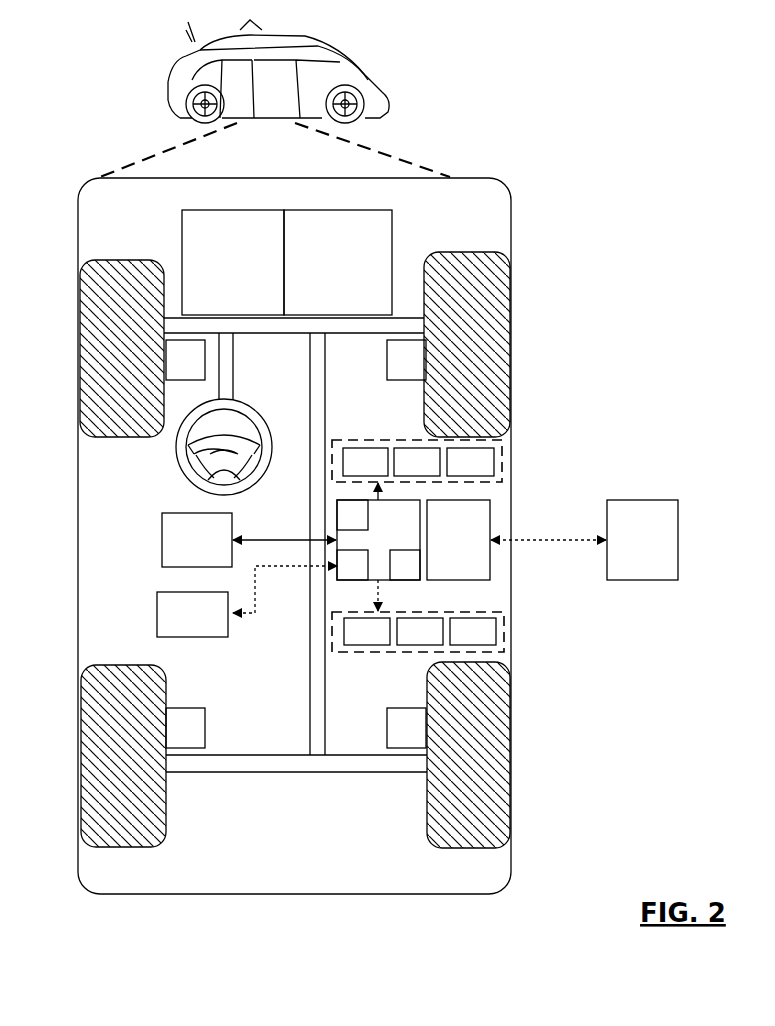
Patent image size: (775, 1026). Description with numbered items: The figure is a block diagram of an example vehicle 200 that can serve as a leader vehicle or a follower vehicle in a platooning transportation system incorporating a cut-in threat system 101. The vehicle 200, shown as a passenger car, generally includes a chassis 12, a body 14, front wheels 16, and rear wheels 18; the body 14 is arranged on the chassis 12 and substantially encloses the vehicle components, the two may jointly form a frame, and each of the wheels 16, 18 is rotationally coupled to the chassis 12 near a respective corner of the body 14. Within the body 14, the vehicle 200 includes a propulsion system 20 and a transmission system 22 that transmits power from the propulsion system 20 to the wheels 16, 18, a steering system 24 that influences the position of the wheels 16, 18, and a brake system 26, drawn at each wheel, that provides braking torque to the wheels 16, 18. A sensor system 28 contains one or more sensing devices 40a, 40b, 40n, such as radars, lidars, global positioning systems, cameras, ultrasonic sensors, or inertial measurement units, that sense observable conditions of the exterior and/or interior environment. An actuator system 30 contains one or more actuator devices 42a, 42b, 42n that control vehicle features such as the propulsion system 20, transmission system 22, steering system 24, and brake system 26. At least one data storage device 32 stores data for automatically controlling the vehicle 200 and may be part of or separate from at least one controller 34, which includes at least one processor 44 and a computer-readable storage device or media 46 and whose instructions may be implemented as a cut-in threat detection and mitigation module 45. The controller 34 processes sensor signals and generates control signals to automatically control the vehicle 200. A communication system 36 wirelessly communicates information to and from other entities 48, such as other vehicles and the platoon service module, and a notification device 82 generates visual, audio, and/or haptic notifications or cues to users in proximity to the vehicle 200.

The vehicle 200 is at (258, 67).
The cut-in threat system 101 is at (530, 190).
The body 14 is at (78, 520).
The chassis 12 is at (310, 690).
The front wheels 16 is at (124, 260).
The rear wheels 18 is at (138, 848).
The propulsion system 20 is at (233, 262).
The transmission system 22 is at (338, 262).
The steering system 24 is at (250, 354).
The brake system 26 is at (296, 544).
The sensor system 28 is at (344, 440).
The actuator system 30 is at (366, 652).
The data storage device 32 is at (192, 614).
The controller 34 is at (378, 540).
The communication system 36 is at (458, 540).
The sensing device 40a is at (365, 462).
The sensing device 40b is at (417, 462).
The sensing device 40n is at (470, 462).
The actuator device 42a is at (367, 631).
The actuator device 42b is at (420, 631).
The actuator device 42n is at (473, 631).
The processor 44 is at (352, 565).
The cut-in threat detection and mitigation module 45 is at (352, 515).
The computer-readable storage device or media 46 is at (405, 565).
The other entities 48 is at (642, 540).
The notification device 82 is at (197, 540).